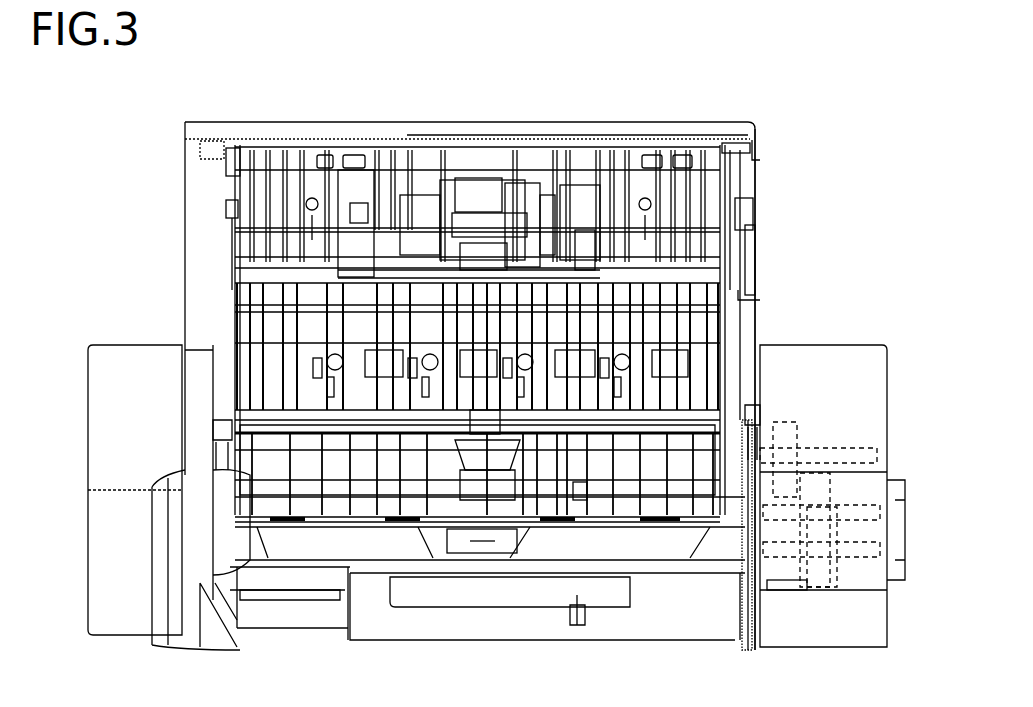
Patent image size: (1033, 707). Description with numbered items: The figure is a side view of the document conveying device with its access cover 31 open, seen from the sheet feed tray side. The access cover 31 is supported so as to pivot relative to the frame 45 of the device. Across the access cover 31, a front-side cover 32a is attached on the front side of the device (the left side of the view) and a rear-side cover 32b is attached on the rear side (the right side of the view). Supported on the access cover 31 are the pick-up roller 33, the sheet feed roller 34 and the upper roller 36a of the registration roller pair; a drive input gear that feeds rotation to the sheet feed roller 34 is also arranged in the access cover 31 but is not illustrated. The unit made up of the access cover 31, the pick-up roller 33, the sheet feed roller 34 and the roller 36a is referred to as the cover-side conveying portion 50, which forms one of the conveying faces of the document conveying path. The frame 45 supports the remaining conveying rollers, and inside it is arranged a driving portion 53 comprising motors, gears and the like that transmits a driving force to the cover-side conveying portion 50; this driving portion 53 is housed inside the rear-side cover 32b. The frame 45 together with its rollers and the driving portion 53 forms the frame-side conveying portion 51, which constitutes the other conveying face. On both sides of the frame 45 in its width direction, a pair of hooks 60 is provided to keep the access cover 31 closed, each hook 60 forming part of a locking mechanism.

The cover-side conveying portion 50 is at (472, 386).
The access cover 31 is at (752, 182).
The front-side cover 32a is at (118, 345).
The rear-side cover 32b is at (858, 345).
The pick-up roller 33 is at (478, 196).
The sheet feed roller 34 is at (493, 255).
The roller 36a is at (377, 360).
The frame 45 is at (280, 487).
The frame-side conveying portion 51 is at (636, 547).
The driving portion 53 is at (848, 448).
The hook 60 is at (218, 428).